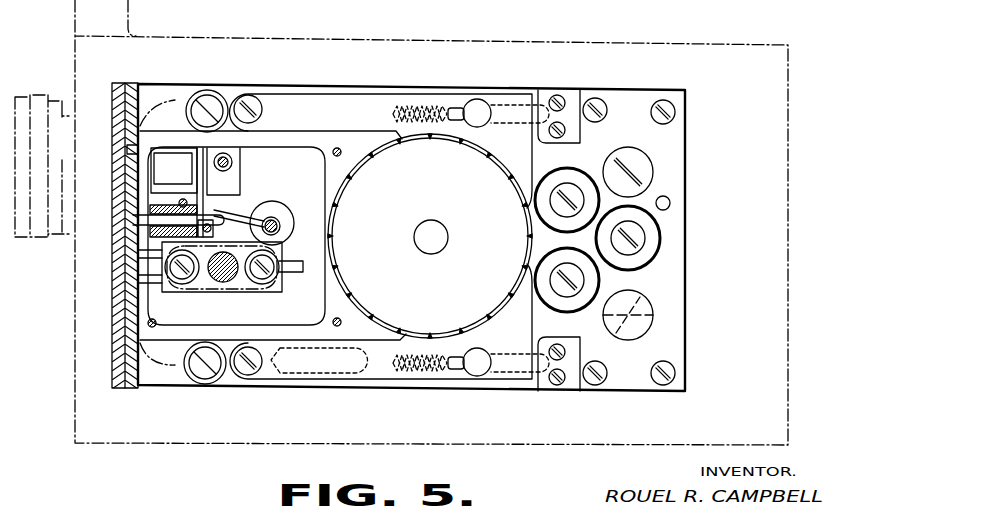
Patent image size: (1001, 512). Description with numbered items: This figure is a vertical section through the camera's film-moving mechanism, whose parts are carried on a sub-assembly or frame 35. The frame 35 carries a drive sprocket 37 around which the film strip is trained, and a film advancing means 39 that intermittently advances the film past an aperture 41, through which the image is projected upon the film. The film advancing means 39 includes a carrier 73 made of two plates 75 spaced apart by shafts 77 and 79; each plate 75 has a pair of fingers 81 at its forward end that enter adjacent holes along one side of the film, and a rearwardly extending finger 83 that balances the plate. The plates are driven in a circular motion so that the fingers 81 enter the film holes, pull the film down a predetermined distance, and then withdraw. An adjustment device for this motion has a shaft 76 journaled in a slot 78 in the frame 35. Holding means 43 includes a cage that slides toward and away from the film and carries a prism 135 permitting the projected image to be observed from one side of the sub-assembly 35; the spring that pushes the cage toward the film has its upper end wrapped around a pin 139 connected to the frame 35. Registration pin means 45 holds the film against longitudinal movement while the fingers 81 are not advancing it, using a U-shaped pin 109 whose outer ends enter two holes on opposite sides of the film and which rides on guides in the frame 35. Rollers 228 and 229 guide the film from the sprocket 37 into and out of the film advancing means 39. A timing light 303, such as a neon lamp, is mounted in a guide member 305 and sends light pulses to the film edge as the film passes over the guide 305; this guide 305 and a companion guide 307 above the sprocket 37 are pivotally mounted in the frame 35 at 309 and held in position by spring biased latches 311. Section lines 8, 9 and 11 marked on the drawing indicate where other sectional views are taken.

The section line 8-8 / crank assembly 8 is at (268, 166).
The section line 9- 9 is at (311, 217).
The section line 11- 11 is at (164, 157).
The sub-assembly 35 is at (353, 80).
The drive sprocket 37 is at (440, 300).
The film advancing means 39 is at (222, 300).
The aperture 41 is at (127, 150).
The holding means 43 is at (163, 134).
The registration pin means 45 is at (218, 228).
The carrier 73 is at (246, 288).
The plates 75 is at (186, 283).
The shaft 76 is at (232, 167).
The shaft 77 is at (185, 281).
The slot 78 is at (229, 160).
The shaft 79 is at (278, 274).
The fingers 81 is at (140, 297).
The rearwardly extending finger 83 is at (301, 274).
The U-shaped pin 109 is at (171, 204).
The prism 135 is at (200, 178).
The pin 139 is at (205, 180).
The roller 228 is at (210, 90).
The roller 229 is at (208, 385).
The timing light 303 is at (326, 378).
The guide member 305 is at (390, 376).
The companion guide 307 is at (372, 95).
The pivotal mounting 309 is at (257, 98).
The spring biased latches 311 is at (504, 102).